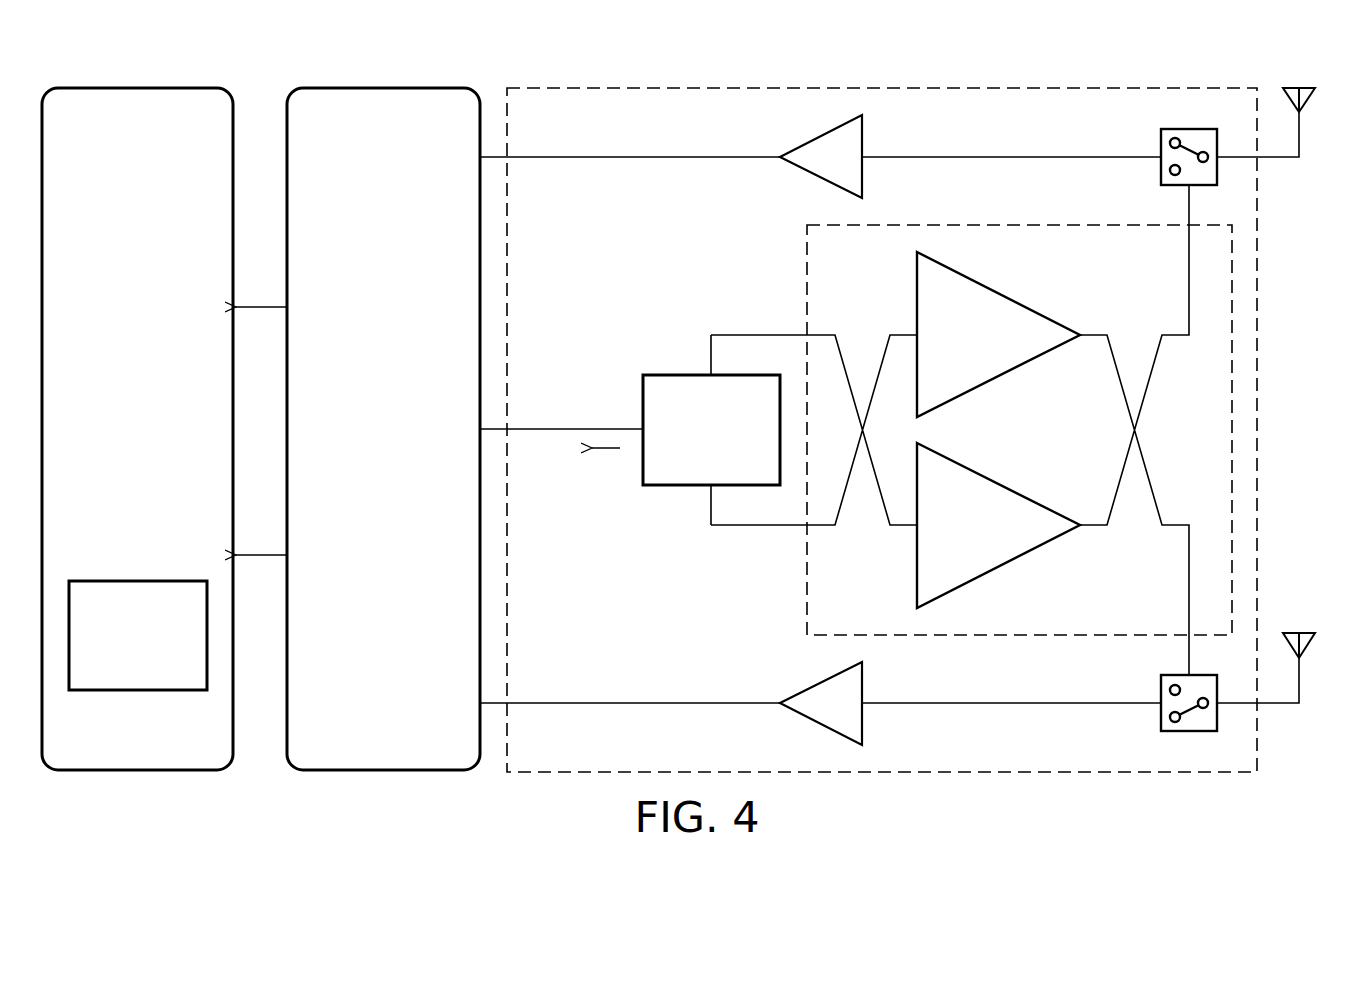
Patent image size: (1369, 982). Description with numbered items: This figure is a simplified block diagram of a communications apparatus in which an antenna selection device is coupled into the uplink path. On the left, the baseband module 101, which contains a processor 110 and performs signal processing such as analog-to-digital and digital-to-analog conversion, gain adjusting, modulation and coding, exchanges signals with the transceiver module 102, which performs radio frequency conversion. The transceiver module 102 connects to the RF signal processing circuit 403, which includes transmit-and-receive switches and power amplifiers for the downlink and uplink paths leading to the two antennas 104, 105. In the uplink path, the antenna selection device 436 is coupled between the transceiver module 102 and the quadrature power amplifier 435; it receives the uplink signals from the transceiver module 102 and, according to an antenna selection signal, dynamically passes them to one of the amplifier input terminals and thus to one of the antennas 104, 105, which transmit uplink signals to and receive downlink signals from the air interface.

The baseband module 101 is at (177, 88).
The transceiver module 102 is at (425, 88).
The processor 110 is at (140, 581).
The RF signal processing circuit 403 is at (1123, 88).
The quadrature power amplifier 435 is at (1030, 225).
The antenna selection device 436 is at (723, 375).
The antenna 104 is at (1293, 88).
The antenna 105 is at (1293, 633).